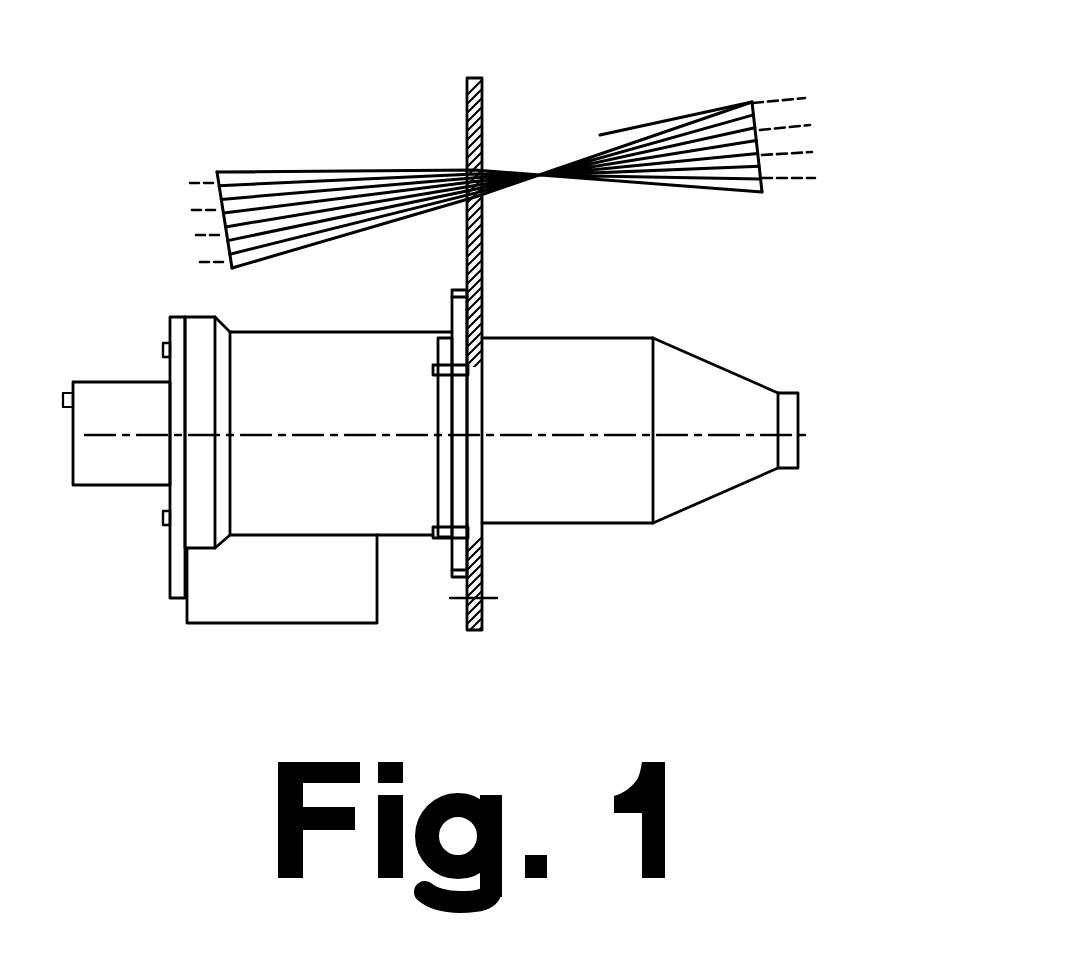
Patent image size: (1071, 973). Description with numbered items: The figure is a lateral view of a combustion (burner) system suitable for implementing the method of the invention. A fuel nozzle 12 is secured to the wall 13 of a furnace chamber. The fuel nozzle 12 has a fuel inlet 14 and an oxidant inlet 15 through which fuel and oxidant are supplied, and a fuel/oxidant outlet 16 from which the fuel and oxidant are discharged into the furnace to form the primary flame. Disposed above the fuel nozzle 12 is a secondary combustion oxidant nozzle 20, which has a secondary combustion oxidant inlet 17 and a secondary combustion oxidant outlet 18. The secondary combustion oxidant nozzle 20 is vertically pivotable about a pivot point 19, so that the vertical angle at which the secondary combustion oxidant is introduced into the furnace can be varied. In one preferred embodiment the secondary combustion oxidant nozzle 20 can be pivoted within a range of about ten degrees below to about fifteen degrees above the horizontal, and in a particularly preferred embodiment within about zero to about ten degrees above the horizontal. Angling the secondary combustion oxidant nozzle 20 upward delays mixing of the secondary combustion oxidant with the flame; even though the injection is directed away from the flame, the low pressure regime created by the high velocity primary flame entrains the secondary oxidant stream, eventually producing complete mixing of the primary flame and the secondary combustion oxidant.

The fuel nozzle 12 is at (648, 333).
The wall 13 is at (482, 582).
The fuel inlet 14 is at (73, 467).
The oxidant inlet 15 is at (315, 623).
The fuel/oxidant outlet 16 is at (800, 418).
The secondary combustion oxidant inlet 17 is at (223, 232).
The secondary combustion oxidant outlet 18 is at (788, 133).
The pivot point 19 is at (492, 163).
The secondary combustion oxidant nozzle 20 is at (668, 122).